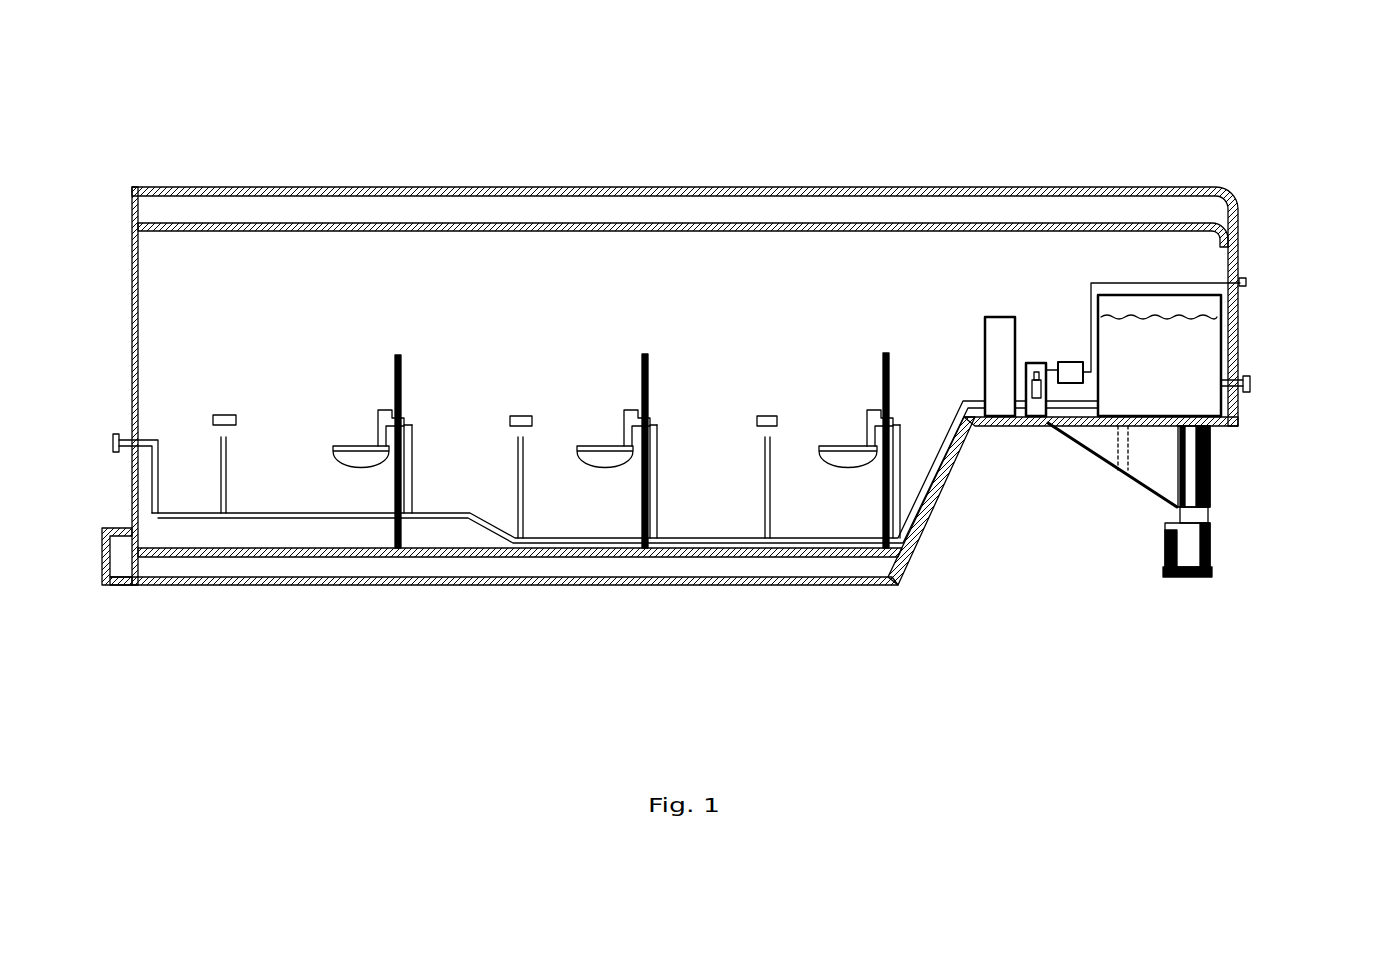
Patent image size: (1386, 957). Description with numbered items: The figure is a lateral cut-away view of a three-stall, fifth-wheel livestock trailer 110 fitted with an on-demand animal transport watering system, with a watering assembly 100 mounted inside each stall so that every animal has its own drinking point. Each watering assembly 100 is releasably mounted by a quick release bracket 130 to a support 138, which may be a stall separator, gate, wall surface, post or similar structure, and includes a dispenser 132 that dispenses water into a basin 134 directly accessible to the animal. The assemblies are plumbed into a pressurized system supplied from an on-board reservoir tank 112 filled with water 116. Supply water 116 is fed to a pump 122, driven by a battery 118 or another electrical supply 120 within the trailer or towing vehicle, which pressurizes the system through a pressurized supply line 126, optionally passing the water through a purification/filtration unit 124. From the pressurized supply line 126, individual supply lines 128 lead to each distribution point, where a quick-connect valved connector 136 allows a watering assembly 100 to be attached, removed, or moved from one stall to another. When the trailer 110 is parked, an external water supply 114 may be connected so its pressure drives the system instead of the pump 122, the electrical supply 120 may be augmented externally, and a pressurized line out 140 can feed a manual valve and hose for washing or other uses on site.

The watering assembly 100 is at (364, 436).
The livestock trailer 110 is at (590, 186).
The reservoir tank 112 is at (1222, 297).
The water supply 114 is at (1247, 400).
The water 116 is at (1222, 330).
The battery 118 is at (1064, 362).
The electrical supply 120 is at (1245, 278).
The pump 122 is at (1036, 420).
The purification/filtration unit 124 is at (1000, 420).
The pressurized supply line 126 is at (930, 510).
The individual supply line 128 is at (771, 490).
The bracket 130 is at (768, 413).
The dispenser 132 is at (862, 432).
The basin 134 is at (834, 443).
The valved connector 136 is at (760, 437).
The support 138 is at (905, 367).
The pressurized line out 140 is at (152, 436).